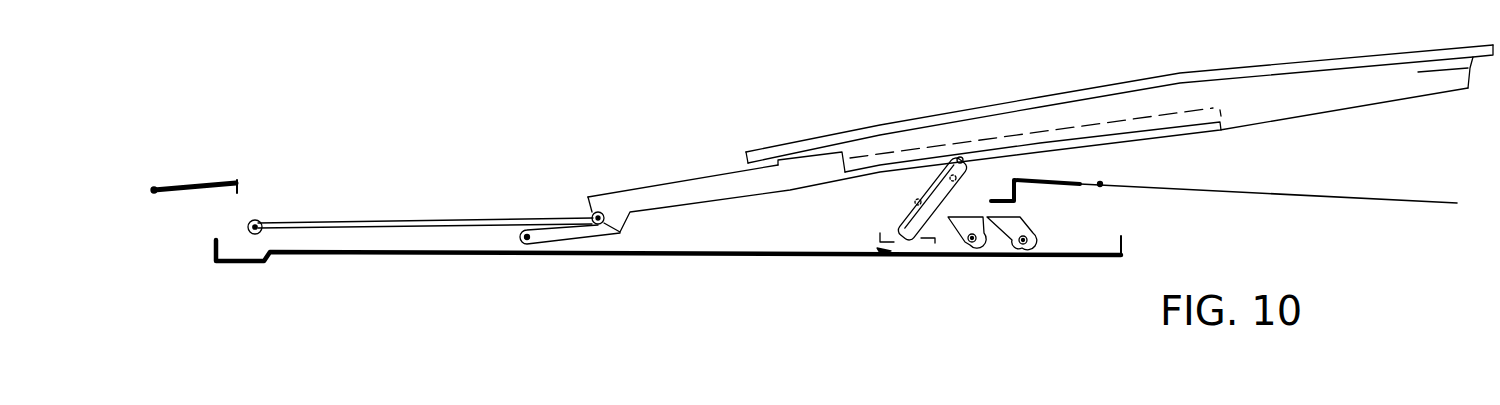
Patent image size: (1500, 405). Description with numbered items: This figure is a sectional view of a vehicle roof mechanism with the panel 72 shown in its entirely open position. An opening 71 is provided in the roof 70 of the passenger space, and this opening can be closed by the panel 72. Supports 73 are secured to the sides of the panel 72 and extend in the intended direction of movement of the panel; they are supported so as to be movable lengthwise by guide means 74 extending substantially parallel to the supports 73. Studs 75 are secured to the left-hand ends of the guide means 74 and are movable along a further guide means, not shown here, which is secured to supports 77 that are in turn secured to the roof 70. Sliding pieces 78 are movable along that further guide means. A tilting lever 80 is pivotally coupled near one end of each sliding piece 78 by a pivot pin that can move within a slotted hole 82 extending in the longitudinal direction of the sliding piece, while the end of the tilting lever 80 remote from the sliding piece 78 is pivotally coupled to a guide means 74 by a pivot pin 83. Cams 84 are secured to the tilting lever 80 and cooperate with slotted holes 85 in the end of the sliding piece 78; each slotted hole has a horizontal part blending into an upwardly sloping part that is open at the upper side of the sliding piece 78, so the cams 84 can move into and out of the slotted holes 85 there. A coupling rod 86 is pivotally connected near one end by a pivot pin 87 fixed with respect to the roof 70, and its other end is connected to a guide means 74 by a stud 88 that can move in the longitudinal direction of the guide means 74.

The roof 70 is at (200, 183).
The opening 71 is at (275, 193).
The panel 72 is at (1073, 95).
The supports 73 is at (1362, 85).
The guide means 74 is at (1200, 133).
The studs 75 is at (525, 243).
The supports 77 is at (407, 253).
The sliding pieces 78 is at (892, 258).
The tilting lever 80 is at (897, 228).
The slotted hole 82 is at (928, 245).
The pivot pin 83 is at (955, 157).
The cams 84 is at (923, 205).
The slotted holes 85 is at (972, 250).
The coupling rod 86 is at (457, 220).
The pivot pin 87 is at (250, 227).
The stud 88 is at (605, 197).